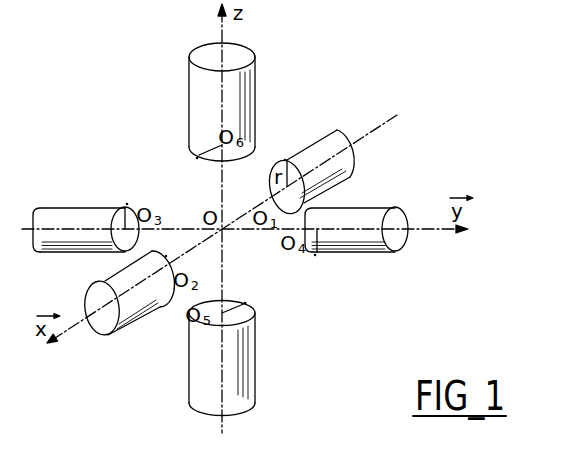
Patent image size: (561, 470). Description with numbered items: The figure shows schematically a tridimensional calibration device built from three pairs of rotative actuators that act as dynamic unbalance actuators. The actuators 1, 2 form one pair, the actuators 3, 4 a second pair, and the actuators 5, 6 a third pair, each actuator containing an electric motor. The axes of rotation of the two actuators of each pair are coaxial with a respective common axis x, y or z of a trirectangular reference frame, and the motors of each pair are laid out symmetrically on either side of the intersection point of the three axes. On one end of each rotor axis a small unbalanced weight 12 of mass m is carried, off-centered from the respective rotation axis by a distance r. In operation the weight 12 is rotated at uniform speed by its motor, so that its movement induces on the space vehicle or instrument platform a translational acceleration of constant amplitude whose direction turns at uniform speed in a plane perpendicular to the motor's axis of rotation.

The rotative actuator 1 is at (320, 152).
The rotative actuator 2 is at (132, 307).
The rotative actuator 3 is at (70, 222).
The rotative actuator 4 is at (363, 238).
The rotative actuator 5 is at (237, 387).
The rotative actuator 6 is at (243, 90).
The unbalanced weight 12 is at (197, 158).